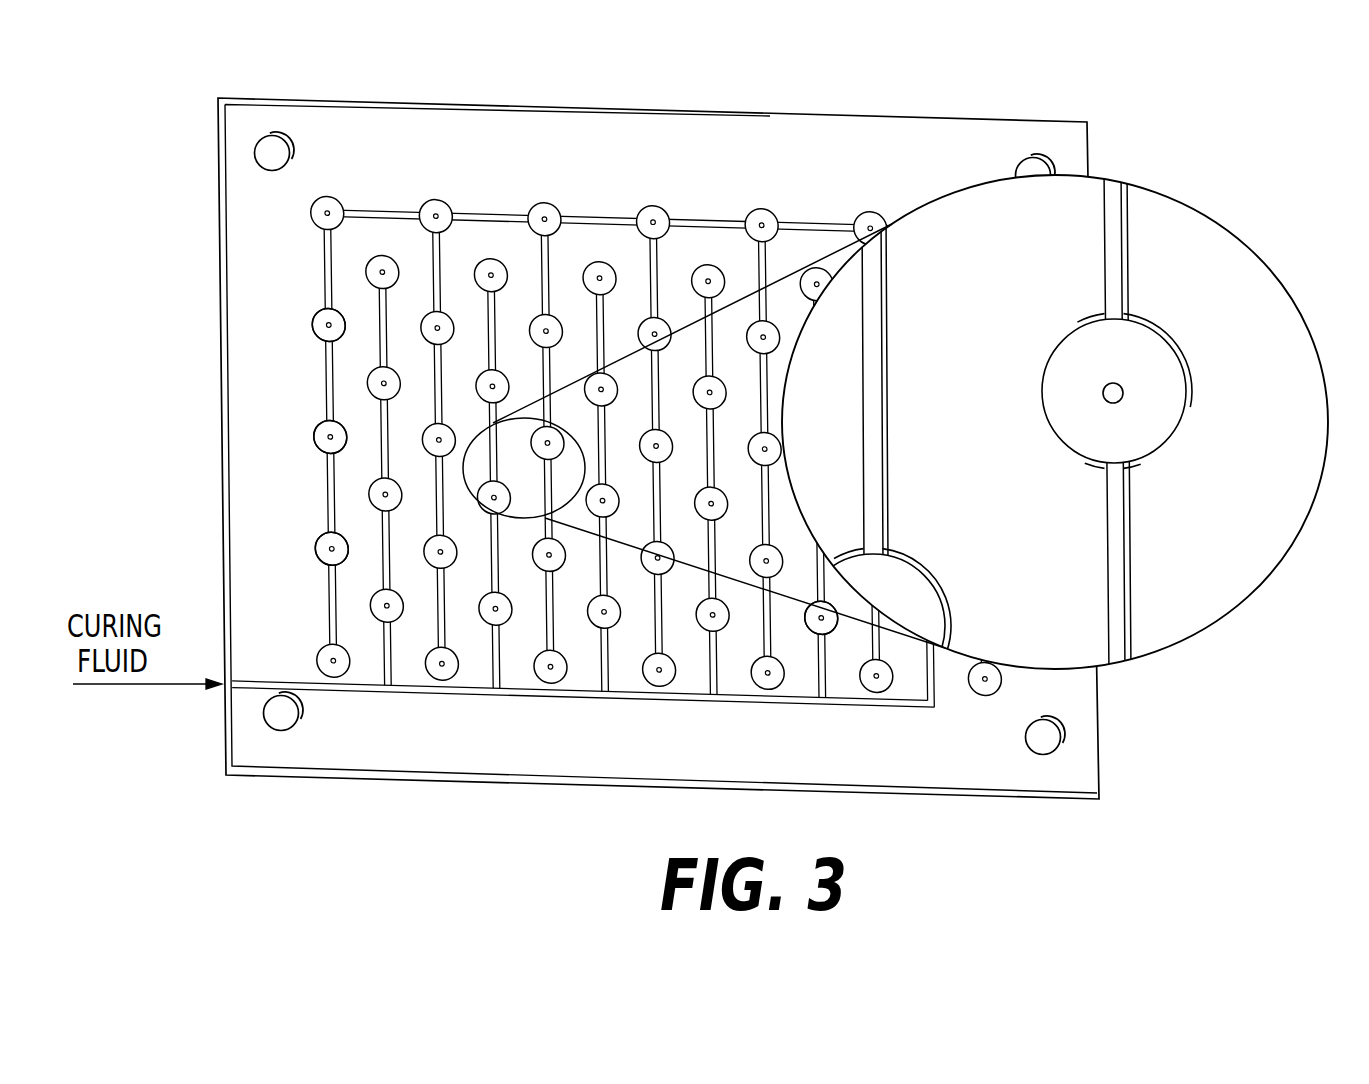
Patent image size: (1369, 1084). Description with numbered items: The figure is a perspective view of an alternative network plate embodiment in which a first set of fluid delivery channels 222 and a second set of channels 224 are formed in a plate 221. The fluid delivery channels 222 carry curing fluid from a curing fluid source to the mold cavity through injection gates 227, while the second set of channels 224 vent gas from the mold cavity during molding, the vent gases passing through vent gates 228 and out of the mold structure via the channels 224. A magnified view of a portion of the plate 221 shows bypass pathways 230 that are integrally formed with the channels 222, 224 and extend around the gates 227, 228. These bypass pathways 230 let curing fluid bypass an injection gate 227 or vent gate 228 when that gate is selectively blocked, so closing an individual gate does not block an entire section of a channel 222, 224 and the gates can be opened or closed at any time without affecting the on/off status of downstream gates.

The plate 221 is at (358, 146).
The fluid delivery channels 222 is at (483, 694).
The second set of channels 224 is at (603, 217).
The injection gates 227 is at (308, 548).
The vent gates 228 is at (440, 213).
The bypass pathways 230 is at (433, 205).